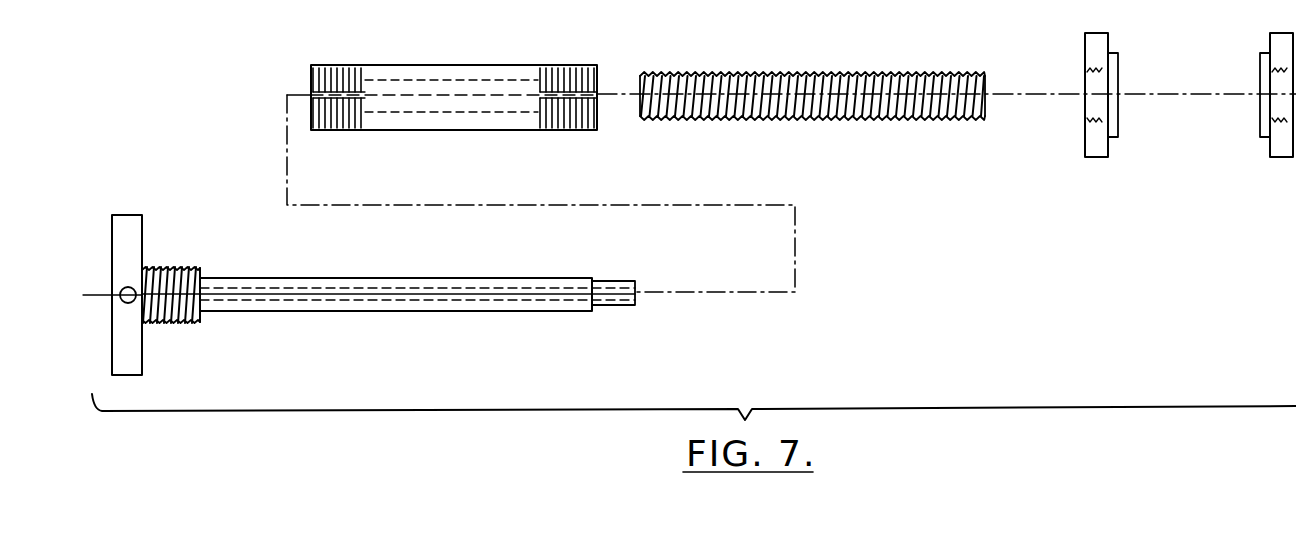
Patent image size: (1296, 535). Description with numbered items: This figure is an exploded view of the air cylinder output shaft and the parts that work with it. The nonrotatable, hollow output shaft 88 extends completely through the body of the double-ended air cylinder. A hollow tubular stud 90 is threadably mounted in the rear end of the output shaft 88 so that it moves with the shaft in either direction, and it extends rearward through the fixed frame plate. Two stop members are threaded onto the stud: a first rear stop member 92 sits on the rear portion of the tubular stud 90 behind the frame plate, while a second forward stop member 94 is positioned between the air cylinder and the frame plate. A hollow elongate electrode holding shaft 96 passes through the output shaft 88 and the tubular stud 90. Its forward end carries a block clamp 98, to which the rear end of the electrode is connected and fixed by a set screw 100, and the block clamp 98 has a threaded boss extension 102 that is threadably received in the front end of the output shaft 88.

The output shaft 88 is at (505, 72).
The tubular stud 90 is at (815, 72).
The first rear stop member 92 is at (1278, 45).
The second forward stop member 94 is at (1092, 45).
The electrode holding shaft 96 is at (318, 313).
The block clamp 98 is at (128, 228).
The set screw 100 is at (122, 303).
The threaded boss extension 102 is at (183, 325).